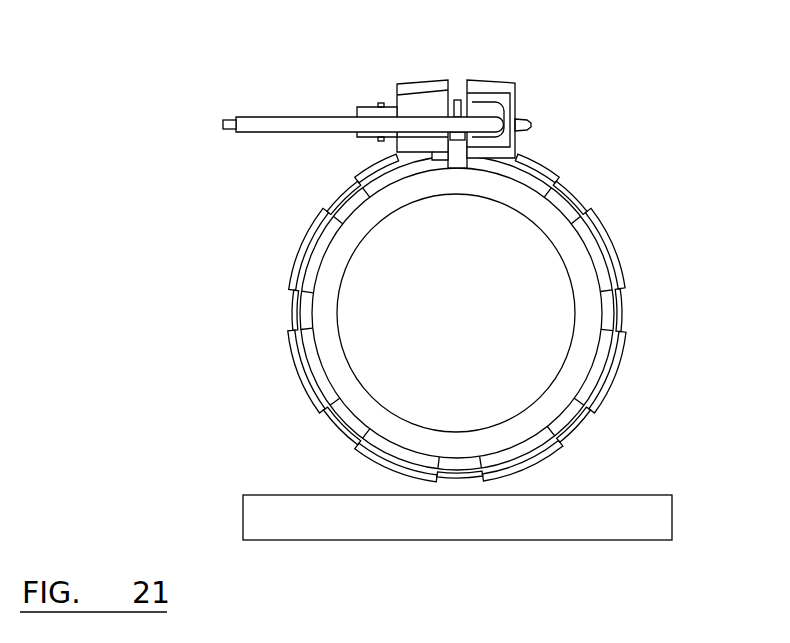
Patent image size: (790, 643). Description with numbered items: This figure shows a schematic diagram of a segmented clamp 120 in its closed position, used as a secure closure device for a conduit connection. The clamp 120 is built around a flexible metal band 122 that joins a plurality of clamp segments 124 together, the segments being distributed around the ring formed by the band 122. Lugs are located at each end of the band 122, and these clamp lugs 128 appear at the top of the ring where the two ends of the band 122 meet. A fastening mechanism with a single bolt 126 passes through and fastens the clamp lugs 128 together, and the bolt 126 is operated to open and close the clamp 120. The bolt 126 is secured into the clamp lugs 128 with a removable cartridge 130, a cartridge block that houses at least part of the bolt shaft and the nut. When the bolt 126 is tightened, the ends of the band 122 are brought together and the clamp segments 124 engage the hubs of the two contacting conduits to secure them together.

The clamp 120 is at (441, 247).
The flexible metal band 122 is at (293, 305).
The clamp segments 124 is at (300, 243).
The bolt 126 is at (291, 119).
The clamp lugs 128 is at (410, 78).
The removable cartridge 130 is at (528, 133).